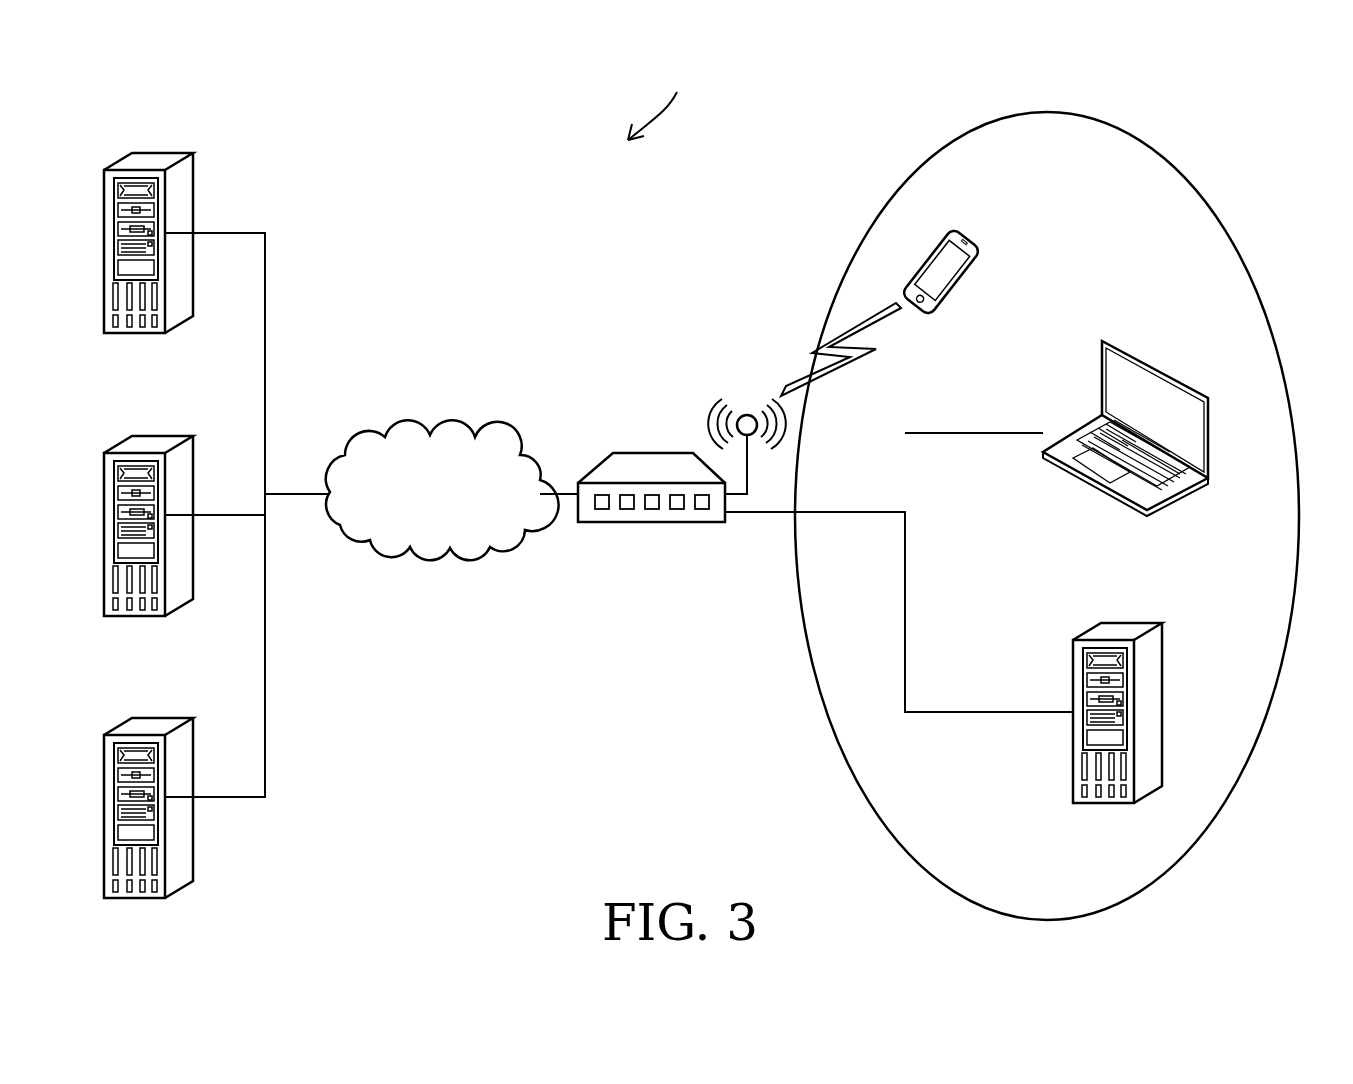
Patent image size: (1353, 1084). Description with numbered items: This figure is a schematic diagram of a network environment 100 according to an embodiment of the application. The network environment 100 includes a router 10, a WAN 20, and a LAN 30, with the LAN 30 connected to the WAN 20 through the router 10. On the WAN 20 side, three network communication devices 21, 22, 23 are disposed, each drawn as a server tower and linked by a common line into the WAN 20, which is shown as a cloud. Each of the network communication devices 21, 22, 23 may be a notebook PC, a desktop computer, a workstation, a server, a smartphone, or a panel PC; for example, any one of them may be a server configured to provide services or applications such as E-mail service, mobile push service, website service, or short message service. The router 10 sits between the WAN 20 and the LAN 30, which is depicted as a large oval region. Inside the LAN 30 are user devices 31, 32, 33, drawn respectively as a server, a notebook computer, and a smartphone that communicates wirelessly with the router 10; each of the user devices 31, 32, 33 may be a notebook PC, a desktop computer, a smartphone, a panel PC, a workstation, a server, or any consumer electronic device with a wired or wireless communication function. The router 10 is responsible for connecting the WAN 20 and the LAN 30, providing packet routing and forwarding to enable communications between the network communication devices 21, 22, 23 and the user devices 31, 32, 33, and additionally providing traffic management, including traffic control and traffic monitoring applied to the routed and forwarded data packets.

The network environment 100 is at (669, 97).
The router 10 is at (652, 522).
The WAN 20 is at (435, 548).
The network communication device 21 is at (152, 158).
The network communication device 22 is at (152, 441).
The network communication device 23 is at (152, 723).
The LAN 30 is at (1180, 168).
The user device 31 is at (1120, 628).
The user device 32 is at (1152, 368).
The user device 33 is at (968, 268).